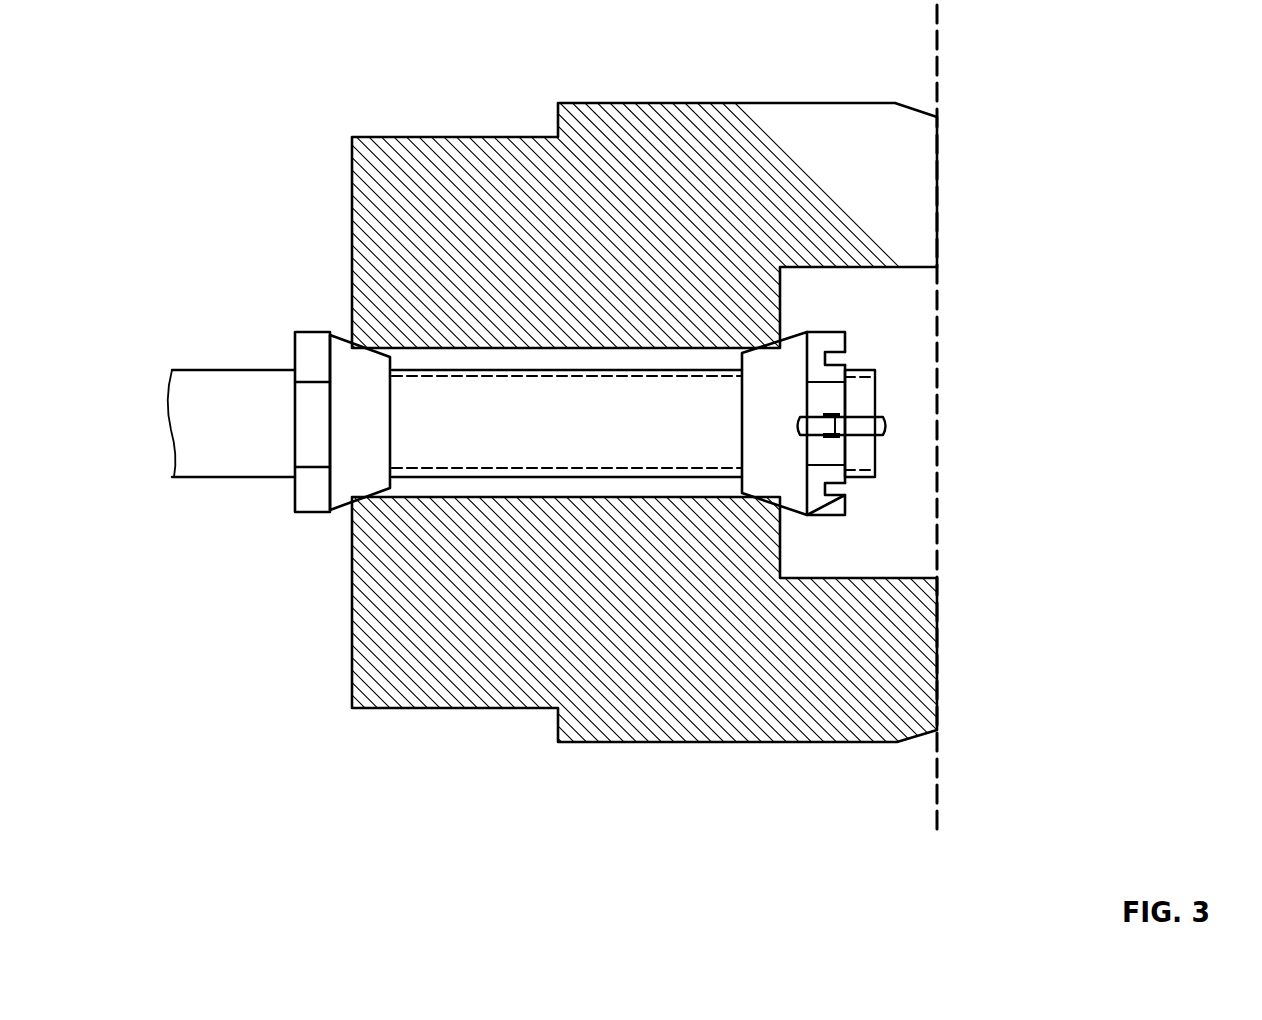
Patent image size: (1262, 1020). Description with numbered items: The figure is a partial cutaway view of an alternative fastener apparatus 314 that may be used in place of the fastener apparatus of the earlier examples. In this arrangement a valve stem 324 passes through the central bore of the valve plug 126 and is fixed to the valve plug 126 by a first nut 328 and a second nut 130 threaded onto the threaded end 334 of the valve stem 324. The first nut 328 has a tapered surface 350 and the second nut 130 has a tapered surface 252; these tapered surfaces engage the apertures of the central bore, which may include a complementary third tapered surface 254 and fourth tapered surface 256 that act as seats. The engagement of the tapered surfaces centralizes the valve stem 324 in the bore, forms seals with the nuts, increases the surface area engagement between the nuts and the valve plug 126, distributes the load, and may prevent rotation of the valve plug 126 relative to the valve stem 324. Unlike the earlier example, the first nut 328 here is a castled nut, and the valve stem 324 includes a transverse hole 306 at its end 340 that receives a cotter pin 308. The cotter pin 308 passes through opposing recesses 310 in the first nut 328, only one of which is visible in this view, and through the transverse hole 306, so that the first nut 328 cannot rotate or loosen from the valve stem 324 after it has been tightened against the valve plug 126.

The fastener apparatus 314 is at (218, 47).
The valve plug 126 is at (480, 172).
The first nut 328 is at (772, 387).
The recesses 310 is at (833, 410).
The second tapered surface 252 is at (332, 345).
The fourth tapered surface 256 is at (363, 342).
The valve stem 324 is at (218, 377).
The second nut 130 is at (317, 495).
The threaded end 334 is at (483, 432).
The transverse hole 306 is at (850, 412).
The cotter pin 308 is at (883, 418).
The end of the valve stem 340 is at (877, 463).
The tapered surface 350 is at (793, 507).
The third tapered surface 254 is at (773, 503).